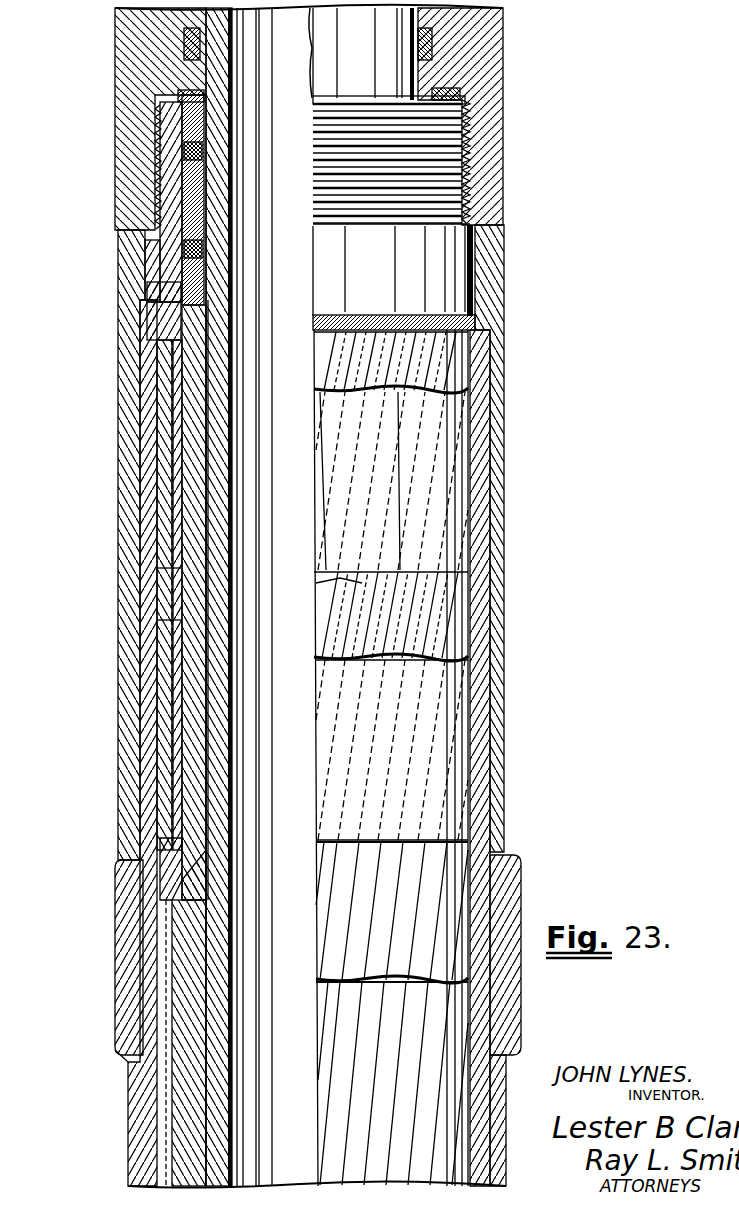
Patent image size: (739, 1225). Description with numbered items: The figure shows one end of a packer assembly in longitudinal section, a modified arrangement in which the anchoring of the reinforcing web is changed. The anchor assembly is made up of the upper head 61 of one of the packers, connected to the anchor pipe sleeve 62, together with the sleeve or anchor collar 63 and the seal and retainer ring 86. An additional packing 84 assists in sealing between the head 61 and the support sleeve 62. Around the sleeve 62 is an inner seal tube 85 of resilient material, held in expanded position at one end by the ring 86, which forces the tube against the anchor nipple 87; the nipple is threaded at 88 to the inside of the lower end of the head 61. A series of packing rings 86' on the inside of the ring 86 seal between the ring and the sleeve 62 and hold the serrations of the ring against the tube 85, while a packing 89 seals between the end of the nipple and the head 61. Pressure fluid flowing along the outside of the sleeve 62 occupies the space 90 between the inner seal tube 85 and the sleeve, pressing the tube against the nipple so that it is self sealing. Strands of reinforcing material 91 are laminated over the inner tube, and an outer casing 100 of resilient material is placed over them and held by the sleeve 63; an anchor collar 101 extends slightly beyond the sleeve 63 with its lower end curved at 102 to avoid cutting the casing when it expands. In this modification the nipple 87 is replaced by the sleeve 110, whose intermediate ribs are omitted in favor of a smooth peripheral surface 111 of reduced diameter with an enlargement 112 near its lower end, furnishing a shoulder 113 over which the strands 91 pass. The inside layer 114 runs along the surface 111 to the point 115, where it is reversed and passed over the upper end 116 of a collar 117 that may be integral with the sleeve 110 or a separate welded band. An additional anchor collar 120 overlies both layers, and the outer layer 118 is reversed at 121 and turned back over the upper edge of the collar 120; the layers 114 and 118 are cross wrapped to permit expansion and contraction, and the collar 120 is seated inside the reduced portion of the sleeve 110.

The upper head 61 is at (138, 68).
The anchor pipe sleeve 62 is at (218, 112).
The anchor collar sleeve 63 is at (120, 353).
The packing 84 is at (180, 44).
The inner seal tube 85 is at (195, 430).
The seal and retainer ring 86 is at (242, 200).
The packing rings 86' is at (245, 249).
The anchor nipple 87 is at (314, 198).
The threads 88 is at (157, 167).
The packing 89 is at (178, 100).
The space 90 is at (205, 470).
The reinforcing strands 91 is at (175, 1002).
The outer casing 100 is at (140, 262).
The anchor collar 101 is at (128, 940).
The curved lower end 102 is at (126, 1042).
The modified nipple sleeve 110 is at (163, 218).
The smooth peripheral surface 111 is at (168, 382).
The enlargement 112 is at (180, 876).
The shoulder 113 is at (175, 842).
The inside strand layer 114 is at (332, 368).
The reversal point 115 is at (160, 292).
The upper end of collar 116 is at (162, 325).
The collar 117 is at (165, 427).
The outer strand layer 118 is at (340, 632).
The anchor collar 120 is at (168, 620).
The reversal of outer layer 121 is at (175, 568).